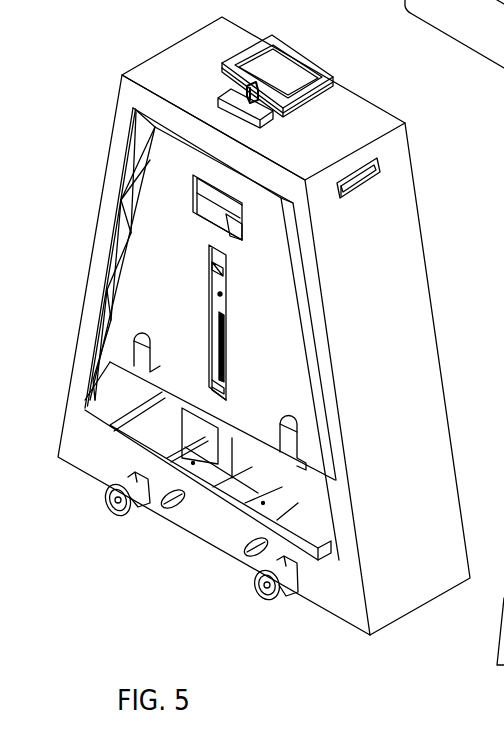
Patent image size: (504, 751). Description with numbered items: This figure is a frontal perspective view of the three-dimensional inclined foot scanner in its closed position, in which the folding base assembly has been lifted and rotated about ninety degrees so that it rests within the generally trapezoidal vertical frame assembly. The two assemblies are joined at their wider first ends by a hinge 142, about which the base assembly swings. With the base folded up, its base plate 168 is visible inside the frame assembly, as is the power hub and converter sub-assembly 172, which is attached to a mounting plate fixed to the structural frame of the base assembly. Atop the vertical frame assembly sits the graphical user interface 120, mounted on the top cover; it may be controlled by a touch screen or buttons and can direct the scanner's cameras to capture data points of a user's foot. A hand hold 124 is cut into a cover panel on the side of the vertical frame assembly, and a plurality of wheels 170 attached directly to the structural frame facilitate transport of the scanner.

The graphical user interface 120 is at (282, 70).
The hand hold 124 is at (372, 173).
The hinge 142 is at (300, 445).
The base plate 168 is at (160, 250).
The wheel 170 is at (250, 590).
The power hub and converter sub-assembly 172 is at (230, 492).